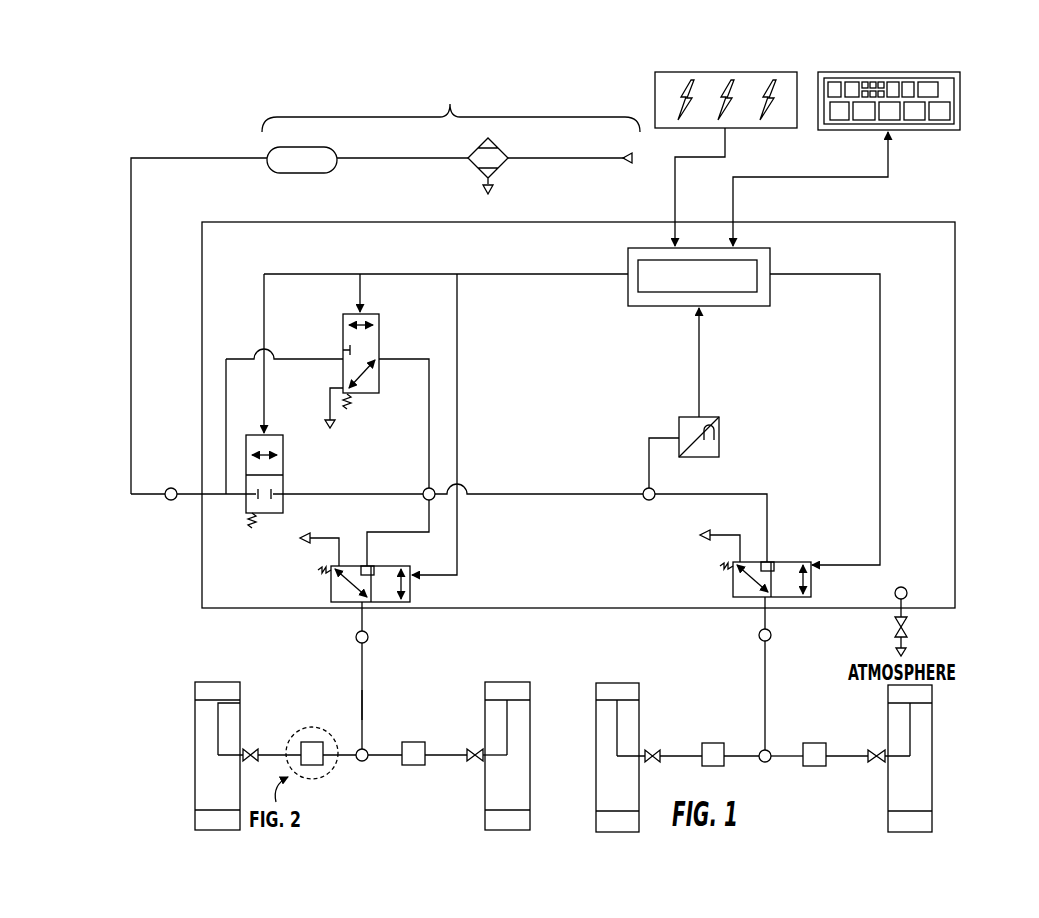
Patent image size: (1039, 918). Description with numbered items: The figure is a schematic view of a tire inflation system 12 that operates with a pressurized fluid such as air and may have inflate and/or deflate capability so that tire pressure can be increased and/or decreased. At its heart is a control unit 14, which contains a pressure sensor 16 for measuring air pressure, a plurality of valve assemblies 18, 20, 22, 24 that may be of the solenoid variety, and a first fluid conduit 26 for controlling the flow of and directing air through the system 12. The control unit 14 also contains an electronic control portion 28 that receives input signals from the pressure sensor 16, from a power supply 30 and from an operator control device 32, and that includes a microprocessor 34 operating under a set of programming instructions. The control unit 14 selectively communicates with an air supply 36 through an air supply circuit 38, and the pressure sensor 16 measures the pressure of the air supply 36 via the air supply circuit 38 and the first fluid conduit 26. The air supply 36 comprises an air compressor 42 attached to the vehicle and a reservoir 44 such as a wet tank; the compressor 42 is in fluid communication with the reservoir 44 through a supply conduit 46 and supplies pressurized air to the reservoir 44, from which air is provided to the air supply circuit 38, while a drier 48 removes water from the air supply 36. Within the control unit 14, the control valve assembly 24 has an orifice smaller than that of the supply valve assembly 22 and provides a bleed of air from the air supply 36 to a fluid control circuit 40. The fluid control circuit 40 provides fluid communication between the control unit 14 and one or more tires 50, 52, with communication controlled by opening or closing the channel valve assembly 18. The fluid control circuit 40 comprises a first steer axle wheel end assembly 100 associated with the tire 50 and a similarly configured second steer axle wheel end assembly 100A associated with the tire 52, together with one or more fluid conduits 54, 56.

The tire inflation system 12 is at (968, 184).
The control unit 14 is at (948, 265).
The pressure sensor 16 is at (679, 422).
The channel valve assembly 18 is at (331, 584).
The valve assembly 20 is at (733, 581).
The supply valve assembly 22 is at (283, 438).
The control valve assembly 24 is at (380, 391).
The first fluid conduit 26 is at (557, 490).
The electronic control portion 28 is at (628, 263).
The power supply 30 is at (722, 70).
The operator control device 32 is at (885, 70).
The microprocessor 34 is at (757, 268).
The air supply 36 is at (451, 105).
The air supply circuit 38 is at (131, 330).
The fluid control circuit 40 is at (360, 681).
The air compressor 42 is at (610, 161).
The reservoir 44 is at (302, 173).
The supply conduit 46 is at (410, 160).
The drier 48 is at (500, 170).
The tire 50 is at (212, 682).
The tire 52 is at (507, 682).
The fluid conduit 54 is at (356, 624).
The fluid conduit 56 is at (366, 702).
The first steer axle wheel end assembly 100 is at (318, 766).
The second steer axle wheel end assembly 100A is at (410, 766).